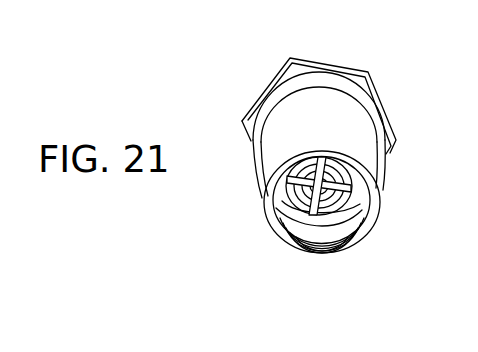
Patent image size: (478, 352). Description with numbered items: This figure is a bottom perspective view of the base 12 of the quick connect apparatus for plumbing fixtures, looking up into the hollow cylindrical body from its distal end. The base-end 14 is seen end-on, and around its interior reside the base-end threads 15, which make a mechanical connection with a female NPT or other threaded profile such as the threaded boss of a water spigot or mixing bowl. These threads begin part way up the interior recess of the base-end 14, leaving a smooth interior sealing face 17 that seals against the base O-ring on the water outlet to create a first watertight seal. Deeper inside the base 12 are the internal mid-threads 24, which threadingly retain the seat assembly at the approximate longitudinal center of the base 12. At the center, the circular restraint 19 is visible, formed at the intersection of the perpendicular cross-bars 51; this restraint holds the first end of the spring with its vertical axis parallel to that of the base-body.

The base 12 is at (238, 68).
The base-end 14 is at (262, 219).
The base-end threads 15 is at (324, 251).
The smooth interior sealing face 17 is at (307, 255).
The circular restraint 19 is at (356, 180).
The mid-threads 24 is at (363, 209).
The perpendicular cross-bars 51 is at (281, 244).